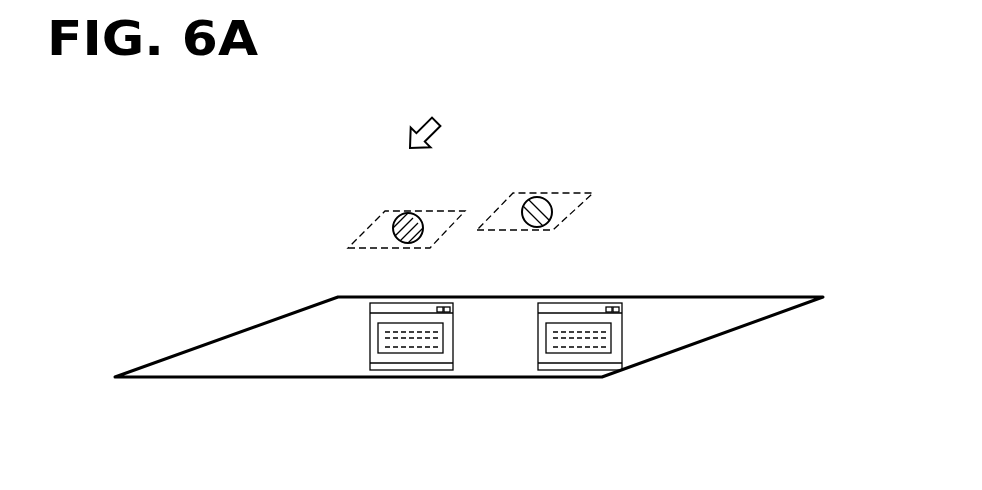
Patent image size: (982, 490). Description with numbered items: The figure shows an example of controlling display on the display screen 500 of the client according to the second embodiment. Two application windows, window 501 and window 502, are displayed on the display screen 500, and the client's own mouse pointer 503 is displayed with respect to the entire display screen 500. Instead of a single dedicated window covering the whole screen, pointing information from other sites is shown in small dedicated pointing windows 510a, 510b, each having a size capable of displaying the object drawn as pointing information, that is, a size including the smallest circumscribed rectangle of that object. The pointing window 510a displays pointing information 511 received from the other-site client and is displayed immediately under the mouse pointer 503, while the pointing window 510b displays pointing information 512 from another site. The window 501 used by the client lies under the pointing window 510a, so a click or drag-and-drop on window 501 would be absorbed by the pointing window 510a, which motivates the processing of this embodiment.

The display screen 500 is at (790, 296).
The window 501 is at (405, 365).
The window 502 is at (583, 365).
The mouse pointer 503 is at (428, 121).
The pointing window 510a is at (362, 235).
The pointing window 510b is at (577, 210).
The pointing information 511 is at (395, 215).
The pointing information 512 is at (542, 198).